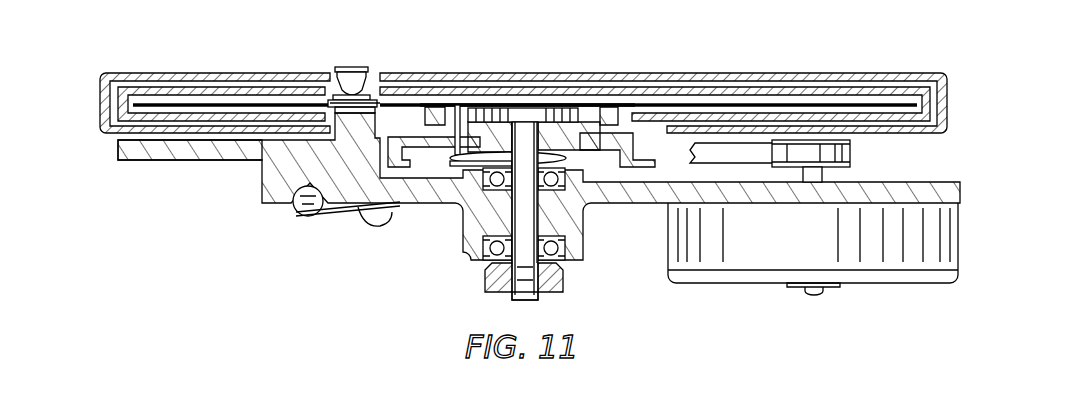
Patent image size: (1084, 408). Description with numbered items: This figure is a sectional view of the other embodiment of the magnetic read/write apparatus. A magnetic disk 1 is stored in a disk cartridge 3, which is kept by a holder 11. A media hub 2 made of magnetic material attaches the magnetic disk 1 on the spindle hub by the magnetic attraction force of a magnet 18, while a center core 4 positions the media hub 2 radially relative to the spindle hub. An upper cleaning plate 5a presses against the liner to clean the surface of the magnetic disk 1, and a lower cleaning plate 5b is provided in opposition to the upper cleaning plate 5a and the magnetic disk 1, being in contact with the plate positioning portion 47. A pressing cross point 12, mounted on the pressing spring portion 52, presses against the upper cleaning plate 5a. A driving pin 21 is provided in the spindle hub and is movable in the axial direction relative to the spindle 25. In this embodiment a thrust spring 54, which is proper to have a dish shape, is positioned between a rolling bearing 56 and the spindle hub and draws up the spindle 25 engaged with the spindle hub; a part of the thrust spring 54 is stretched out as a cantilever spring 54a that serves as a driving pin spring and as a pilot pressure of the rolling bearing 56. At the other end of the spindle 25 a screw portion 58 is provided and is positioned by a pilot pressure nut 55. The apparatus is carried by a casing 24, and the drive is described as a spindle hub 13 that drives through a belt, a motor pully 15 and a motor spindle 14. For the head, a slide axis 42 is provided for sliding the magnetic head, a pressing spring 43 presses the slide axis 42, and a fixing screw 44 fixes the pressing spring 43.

The magnetic disk 1 is at (173, 103).
The disk cartridge 3 is at (875, 97).
The holder 11 is at (748, 77).
The magnet 18 is at (560, 90).
The media hub 2 is at (602, 103).
The center core 4 is at (615, 113).
The upper cleaning plate 5a is at (335, 110).
The lower cleaning plate 5b is at (328, 103).
The pressing cross point 12 is at (352, 65).
The pressing spring portion 52 is at (368, 78).
The driving pin 21 is at (452, 107).
The thrust spring 54 is at (495, 145).
The cantilever spring 54a is at (493, 155).
The casing 24 is at (150, 153).
The plate positioning portion 47 is at (352, 125).
The slide axis 42 is at (303, 206).
The pressing spring 43 is at (335, 217).
The fixing screw 44 is at (388, 222).
The rolling bearing 56 is at (490, 247).
The spindle 25 is at (523, 212).
The pilot pressure nut 55 is at (562, 281).
The screw portion 58 is at (512, 291).
The motor pully 15 is at (852, 163).
The motor spindle 14 is at (813, 177).
The spindle hub 13 is at (878, 268).